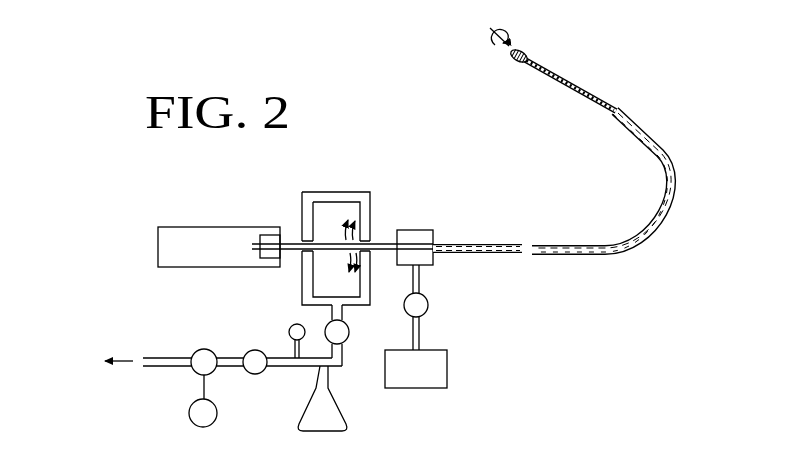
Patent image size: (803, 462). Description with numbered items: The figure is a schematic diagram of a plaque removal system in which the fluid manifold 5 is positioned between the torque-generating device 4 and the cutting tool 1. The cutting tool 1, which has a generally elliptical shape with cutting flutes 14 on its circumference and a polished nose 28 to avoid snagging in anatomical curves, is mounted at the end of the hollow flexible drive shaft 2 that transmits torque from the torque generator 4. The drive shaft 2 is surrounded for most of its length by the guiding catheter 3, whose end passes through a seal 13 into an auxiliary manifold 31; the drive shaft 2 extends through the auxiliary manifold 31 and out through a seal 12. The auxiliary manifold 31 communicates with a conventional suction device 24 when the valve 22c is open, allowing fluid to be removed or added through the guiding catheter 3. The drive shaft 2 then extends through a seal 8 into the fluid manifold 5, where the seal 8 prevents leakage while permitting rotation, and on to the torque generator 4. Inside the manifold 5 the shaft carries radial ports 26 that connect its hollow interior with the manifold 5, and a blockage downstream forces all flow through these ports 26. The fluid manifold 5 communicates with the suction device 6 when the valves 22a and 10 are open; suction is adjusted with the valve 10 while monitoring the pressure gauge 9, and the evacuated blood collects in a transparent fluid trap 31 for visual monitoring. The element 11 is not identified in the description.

The cutting tool 1 is at (532, 43).
The drive shaft 2 is at (570, 72).
The guiding catheter 3 is at (652, 118).
The torque-generating device 4 is at (198, 225).
The fluid manifold 5 is at (341, 251).
The suction device 6 is at (197, 349).
The seal 8 is at (297, 262).
The pressure gauge 9 is at (288, 330).
The valve 10 is at (245, 349).
The wire 11 is at (290, 236).
The seal 12 is at (388, 230).
The seal 13 is at (437, 265).
The cutting flutes 14 is at (519, 61).
The valve 22a is at (351, 332).
The valve 22c is at (432, 305).
The suction device 24 is at (452, 369).
The radial ports 26 is at (345, 253).
The nose 28 is at (509, 57).
The auxiliary manifold 31 is at (436, 228).